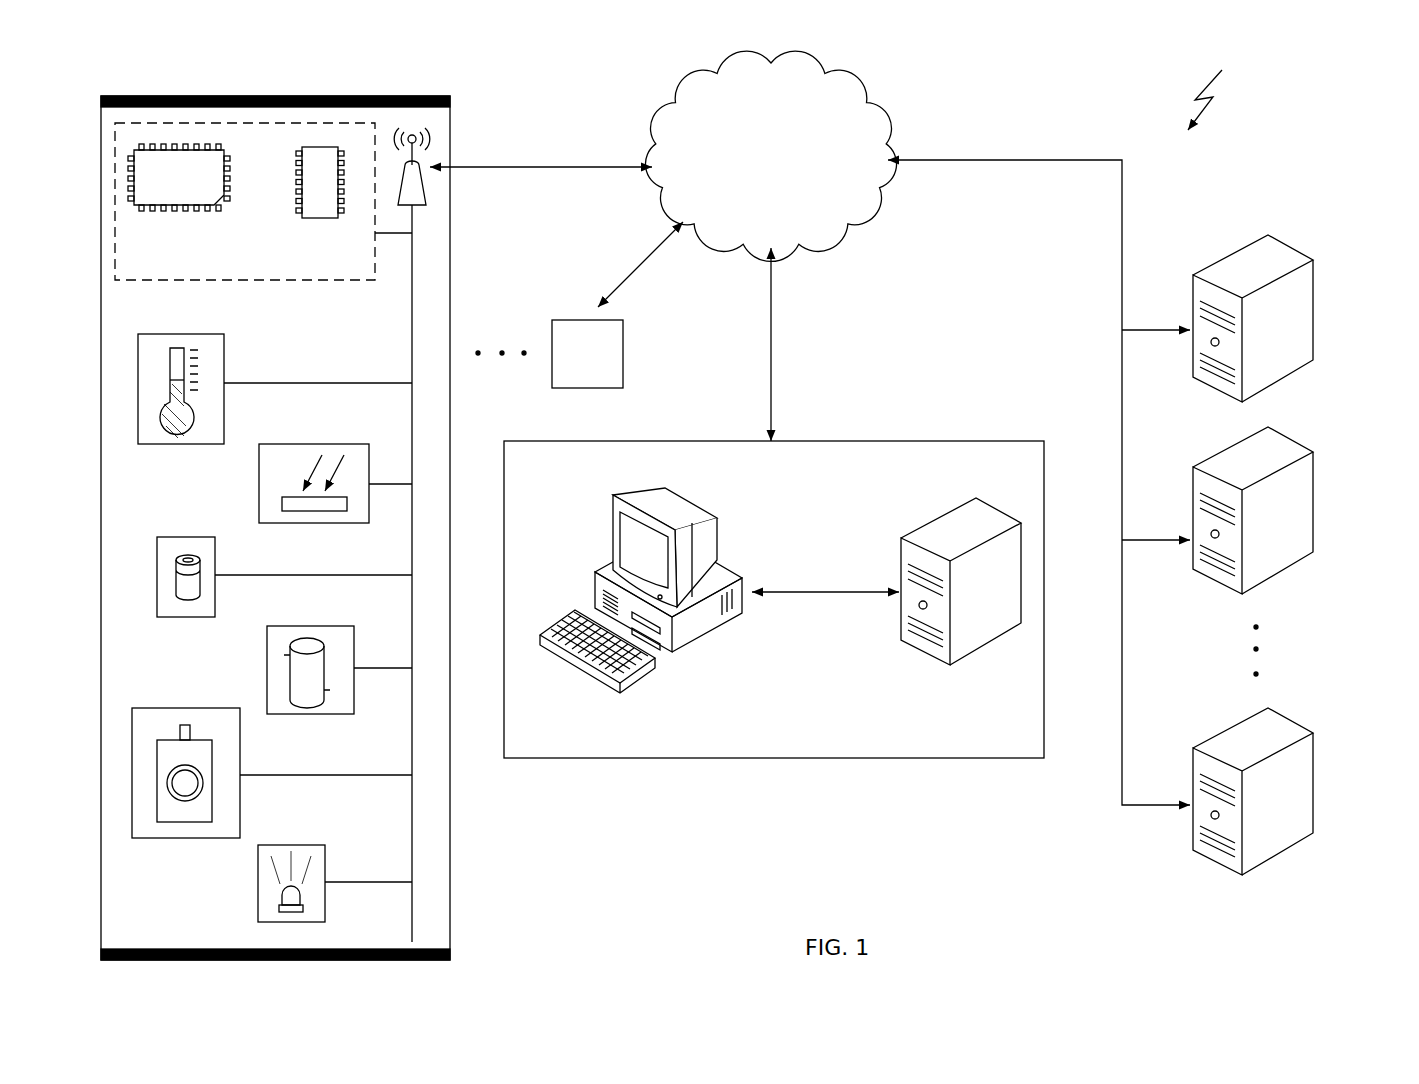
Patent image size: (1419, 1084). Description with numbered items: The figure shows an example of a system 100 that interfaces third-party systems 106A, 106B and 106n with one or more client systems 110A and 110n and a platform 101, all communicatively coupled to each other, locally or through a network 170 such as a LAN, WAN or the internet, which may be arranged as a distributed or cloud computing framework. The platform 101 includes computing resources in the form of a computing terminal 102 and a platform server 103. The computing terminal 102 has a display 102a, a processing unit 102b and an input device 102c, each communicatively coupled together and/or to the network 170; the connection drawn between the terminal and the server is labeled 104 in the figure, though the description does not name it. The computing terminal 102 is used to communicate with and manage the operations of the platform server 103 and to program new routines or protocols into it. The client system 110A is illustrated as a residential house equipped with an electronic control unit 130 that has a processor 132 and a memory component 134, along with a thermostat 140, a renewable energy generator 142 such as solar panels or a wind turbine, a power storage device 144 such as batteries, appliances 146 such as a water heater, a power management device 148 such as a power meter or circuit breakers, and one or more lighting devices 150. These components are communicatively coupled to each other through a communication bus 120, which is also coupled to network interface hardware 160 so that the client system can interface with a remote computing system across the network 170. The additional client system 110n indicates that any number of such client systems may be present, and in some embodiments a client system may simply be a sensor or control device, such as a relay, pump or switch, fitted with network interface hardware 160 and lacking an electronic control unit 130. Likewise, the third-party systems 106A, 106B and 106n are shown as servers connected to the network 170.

The system 100 is at (1228, 85).
The platform 101 is at (912, 441).
The computing terminal 102 is at (671, 584).
The display 102a is at (613, 505).
The processing unit 102b is at (700, 632).
The input device 102c is at (640, 672).
The platform server 103 is at (925, 528).
The communication link 104 is at (805, 592).
The third-party system 106A is at (1313, 272).
The third-party system 106B is at (1313, 464).
The third-party system 106n is at (1313, 746).
The client system 110A is at (450, 243).
The client system 110n is at (623, 345).
The communication bus 120 is at (412, 330).
The electronic control unit 130 is at (300, 282).
The processor 132 is at (218, 202).
The memory component 134 is at (320, 220).
The thermostat 140 is at (224, 428).
The renewable energy generator 142 is at (259, 470).
The power storage device 144 is at (215, 568).
The appliances 146 is at (267, 636).
The power management device 148 is at (240, 758).
The lighting devices 150 is at (258, 883).
The network interface hardware 160 is at (427, 200).
The network 170 is at (858, 84).